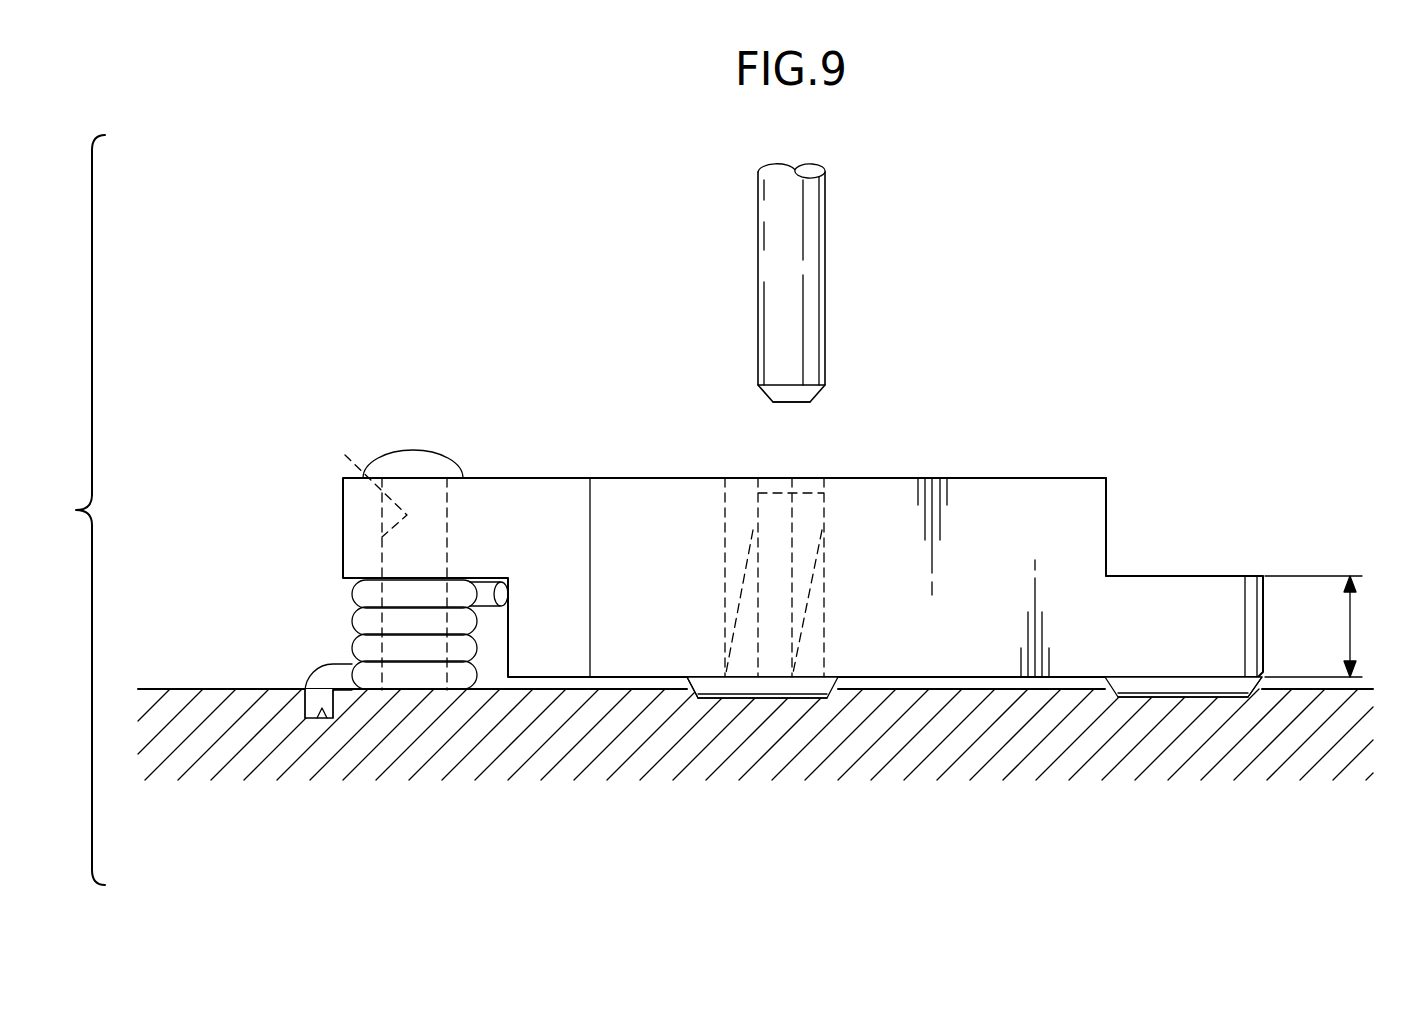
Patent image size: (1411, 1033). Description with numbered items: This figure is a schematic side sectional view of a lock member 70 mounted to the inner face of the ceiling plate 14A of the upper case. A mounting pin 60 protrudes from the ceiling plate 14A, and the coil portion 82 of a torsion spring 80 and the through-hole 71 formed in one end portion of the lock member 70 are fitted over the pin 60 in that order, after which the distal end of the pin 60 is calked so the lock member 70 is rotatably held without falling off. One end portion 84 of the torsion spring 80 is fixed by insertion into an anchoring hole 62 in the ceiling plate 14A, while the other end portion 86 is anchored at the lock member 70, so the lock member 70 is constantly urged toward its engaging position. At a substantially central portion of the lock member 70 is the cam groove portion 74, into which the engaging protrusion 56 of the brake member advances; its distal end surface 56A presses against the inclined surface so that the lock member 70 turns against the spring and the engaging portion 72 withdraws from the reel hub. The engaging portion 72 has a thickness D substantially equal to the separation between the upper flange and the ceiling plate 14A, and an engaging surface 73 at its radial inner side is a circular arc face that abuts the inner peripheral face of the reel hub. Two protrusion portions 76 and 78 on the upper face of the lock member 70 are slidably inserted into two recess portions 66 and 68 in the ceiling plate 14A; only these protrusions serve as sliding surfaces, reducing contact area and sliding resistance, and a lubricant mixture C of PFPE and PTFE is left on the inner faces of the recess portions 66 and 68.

The ceiling plate 14A is at (188, 689).
The engaging protrusion 56 is at (805, 273).
The distal end surface 56A is at (795, 404).
The mounting pin 60 is at (413, 460).
The anchoring hole 62 is at (325, 718).
The recess portion 66 is at (766, 698).
The recess portion 68 is at (1150, 697).
The lock member 70 is at (1078, 468).
The through-hole 71 is at (364, 477).
The engaging portion 72 is at (1203, 574).
The engaging surface 73 is at (1108, 515).
The cam groove portion 74 is at (753, 530).
The protrusion portion 76 is at (712, 690).
The protrusion portion 78 is at (1200, 683).
The torsion spring 80 is at (330, 658).
The coil portion 82 is at (476, 690).
The one end portion 84 is at (305, 705).
The other end portion 86 is at (497, 580).
The mixture C is at (697, 690).
The thickness D is at (1355, 626).